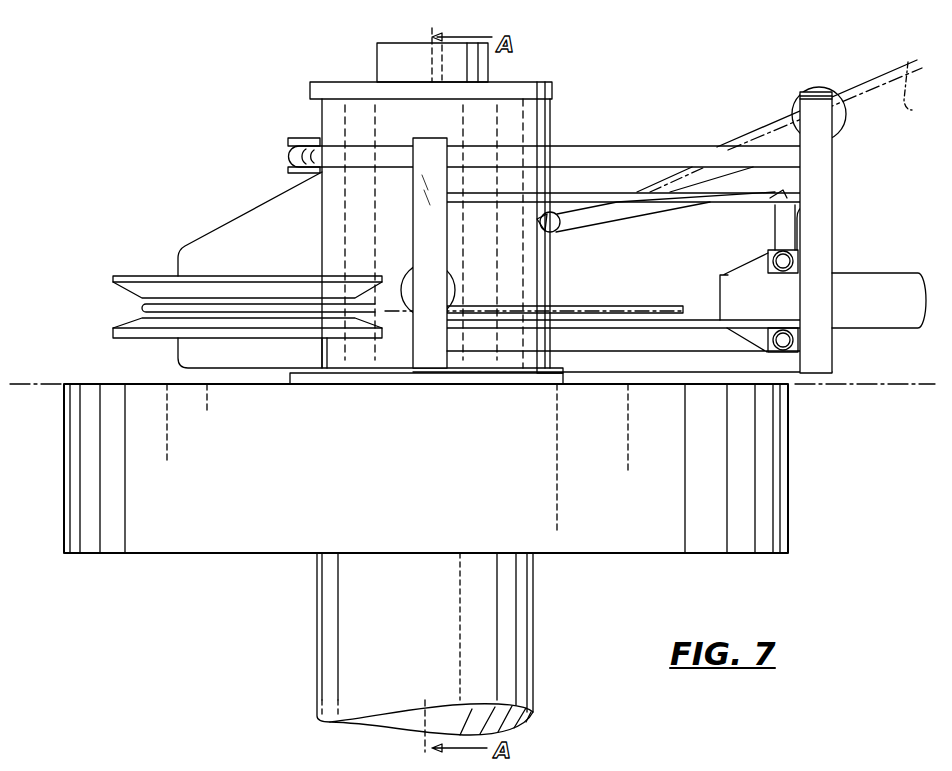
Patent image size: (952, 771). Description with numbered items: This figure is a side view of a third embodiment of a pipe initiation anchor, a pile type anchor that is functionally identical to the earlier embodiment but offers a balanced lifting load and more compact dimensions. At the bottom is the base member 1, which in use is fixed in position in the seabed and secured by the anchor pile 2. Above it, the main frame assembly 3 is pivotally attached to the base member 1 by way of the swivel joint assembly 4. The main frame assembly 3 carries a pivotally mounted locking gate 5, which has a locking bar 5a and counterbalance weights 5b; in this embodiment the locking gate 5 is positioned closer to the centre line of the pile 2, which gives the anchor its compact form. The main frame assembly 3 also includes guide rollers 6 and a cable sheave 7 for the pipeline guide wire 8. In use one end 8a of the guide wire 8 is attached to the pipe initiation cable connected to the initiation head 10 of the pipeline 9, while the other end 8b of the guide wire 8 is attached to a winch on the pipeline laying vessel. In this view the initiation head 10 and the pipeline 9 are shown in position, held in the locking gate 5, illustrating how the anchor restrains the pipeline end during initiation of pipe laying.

The base member 1 is at (75, 463).
The anchor pile 2 is at (325, 628).
The main frame assembly 3 is at (600, 152).
The swivel joint assembly 4 is at (318, 135).
The locking gate 5 is at (785, 212).
The locking bar 5a is at (798, 262).
The counterbalance weights 5b is at (541, 230).
The guide rollers 6 is at (410, 275).
The cable sheave 7 is at (277, 300).
The pipeline guide wire 8 is at (745, 135).
The end of the guide wire 8a is at (668, 300).
The other end of the guide wire 8b is at (920, 96).
The pipeline 9 is at (905, 282).
The initiation head 10 is at (722, 272).